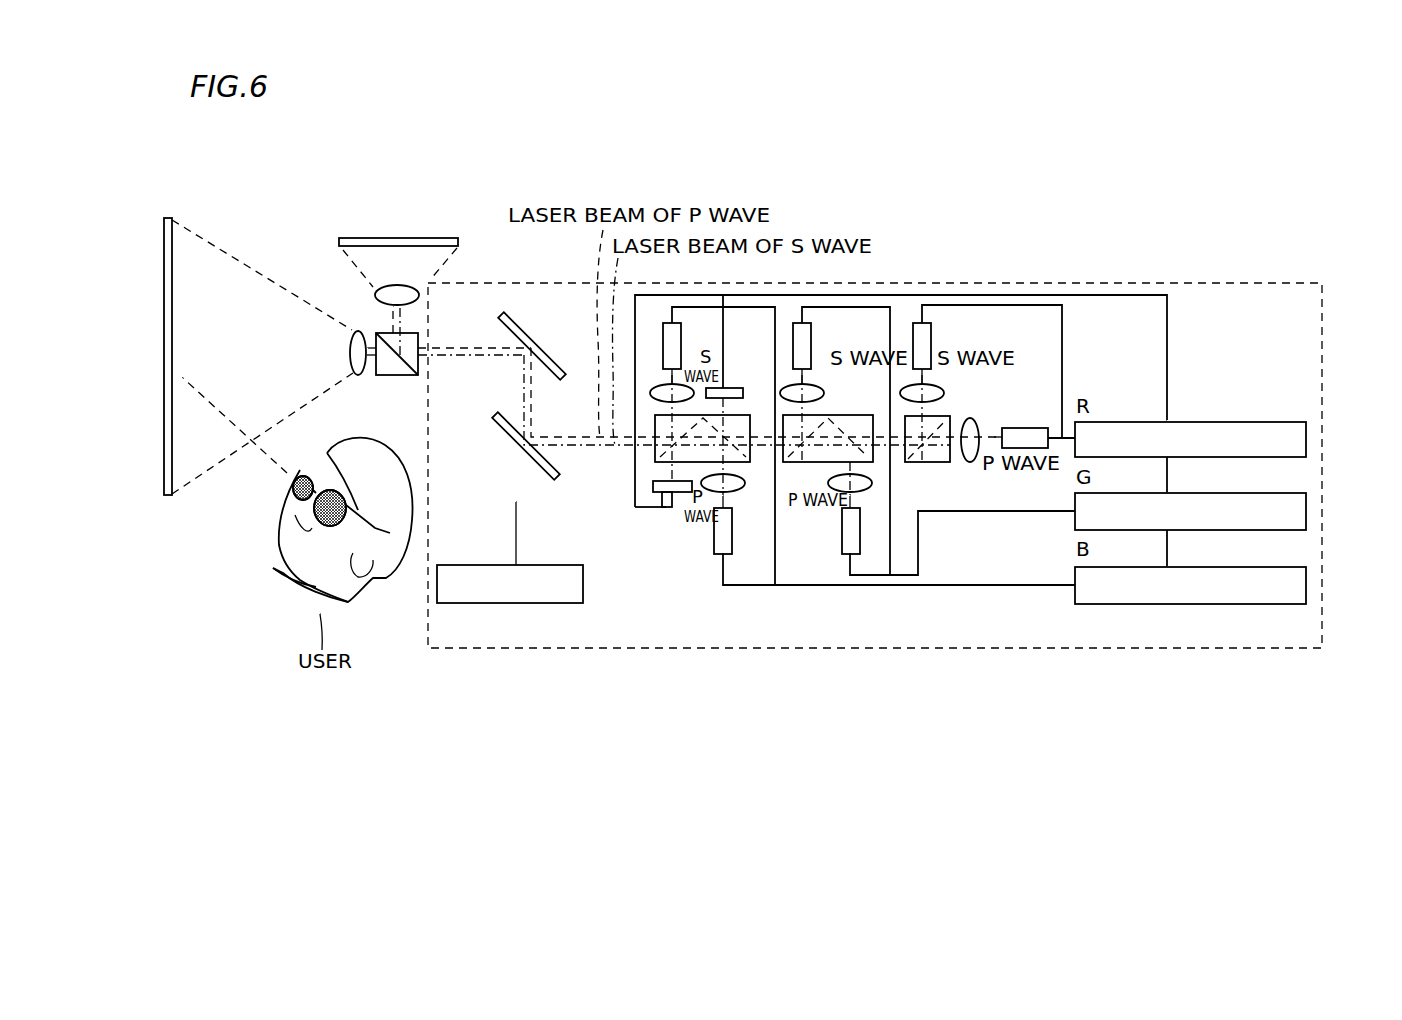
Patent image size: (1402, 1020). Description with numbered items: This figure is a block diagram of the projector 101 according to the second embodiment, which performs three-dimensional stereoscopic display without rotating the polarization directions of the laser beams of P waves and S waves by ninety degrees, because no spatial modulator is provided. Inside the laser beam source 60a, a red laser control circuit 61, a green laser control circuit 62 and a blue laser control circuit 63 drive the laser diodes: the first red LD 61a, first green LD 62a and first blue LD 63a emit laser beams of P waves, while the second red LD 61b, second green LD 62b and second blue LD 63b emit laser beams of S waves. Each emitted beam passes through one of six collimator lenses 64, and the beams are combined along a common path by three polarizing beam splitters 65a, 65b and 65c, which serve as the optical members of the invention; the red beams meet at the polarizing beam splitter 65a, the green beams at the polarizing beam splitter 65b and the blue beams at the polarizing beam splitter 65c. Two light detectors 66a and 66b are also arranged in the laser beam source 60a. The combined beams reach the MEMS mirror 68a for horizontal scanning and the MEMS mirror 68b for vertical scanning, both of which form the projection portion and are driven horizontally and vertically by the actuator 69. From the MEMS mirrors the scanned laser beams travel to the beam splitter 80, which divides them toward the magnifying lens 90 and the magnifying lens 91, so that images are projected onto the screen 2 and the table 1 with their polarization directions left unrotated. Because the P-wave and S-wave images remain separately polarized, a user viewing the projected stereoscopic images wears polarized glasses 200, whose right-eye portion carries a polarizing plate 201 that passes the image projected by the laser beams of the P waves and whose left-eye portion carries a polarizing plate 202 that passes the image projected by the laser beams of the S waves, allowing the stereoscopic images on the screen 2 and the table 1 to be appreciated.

The table 1 is at (443, 238).
The screen 2 is at (165, 217).
The beam splitter 80 is at (396, 378).
The magnifying lens 90 is at (360, 375).
The magnifying lens 91 is at (402, 285).
The projector 101 is at (1355, 250).
The laser beam source 60a is at (1325, 313).
The red laser control circuit 61 is at (1235, 422).
The green laser control circuit 62 is at (1235, 493).
The blue laser control circuit 63 is at (1235, 567).
The first red LD 61a is at (1032, 428).
The second red LD 61b is at (933, 347).
The first green LD 62a is at (861, 535).
The second green LD 62b is at (813, 347).
The first blue LD 63a is at (733, 535).
The second blue LD 63b is at (683, 347).
The collimator lens 64 is at (663, 385).
The polarizing beam splitter 65a is at (930, 465).
The polarizing beam splitter 65b is at (872, 432).
The polarizing beam splitter 65c is at (752, 432).
The light detector 66a is at (745, 391).
The light detector 66b is at (664, 496).
The MEMS mirror 68a is at (510, 414).
The MEMS mirror 68b is at (541, 338).
The actuator 69 is at (545, 565).
The polarized glasses 200 is at (287, 486).
The polarizing plate 201 is at (300, 500).
The polarizing plate 202 is at (325, 528).